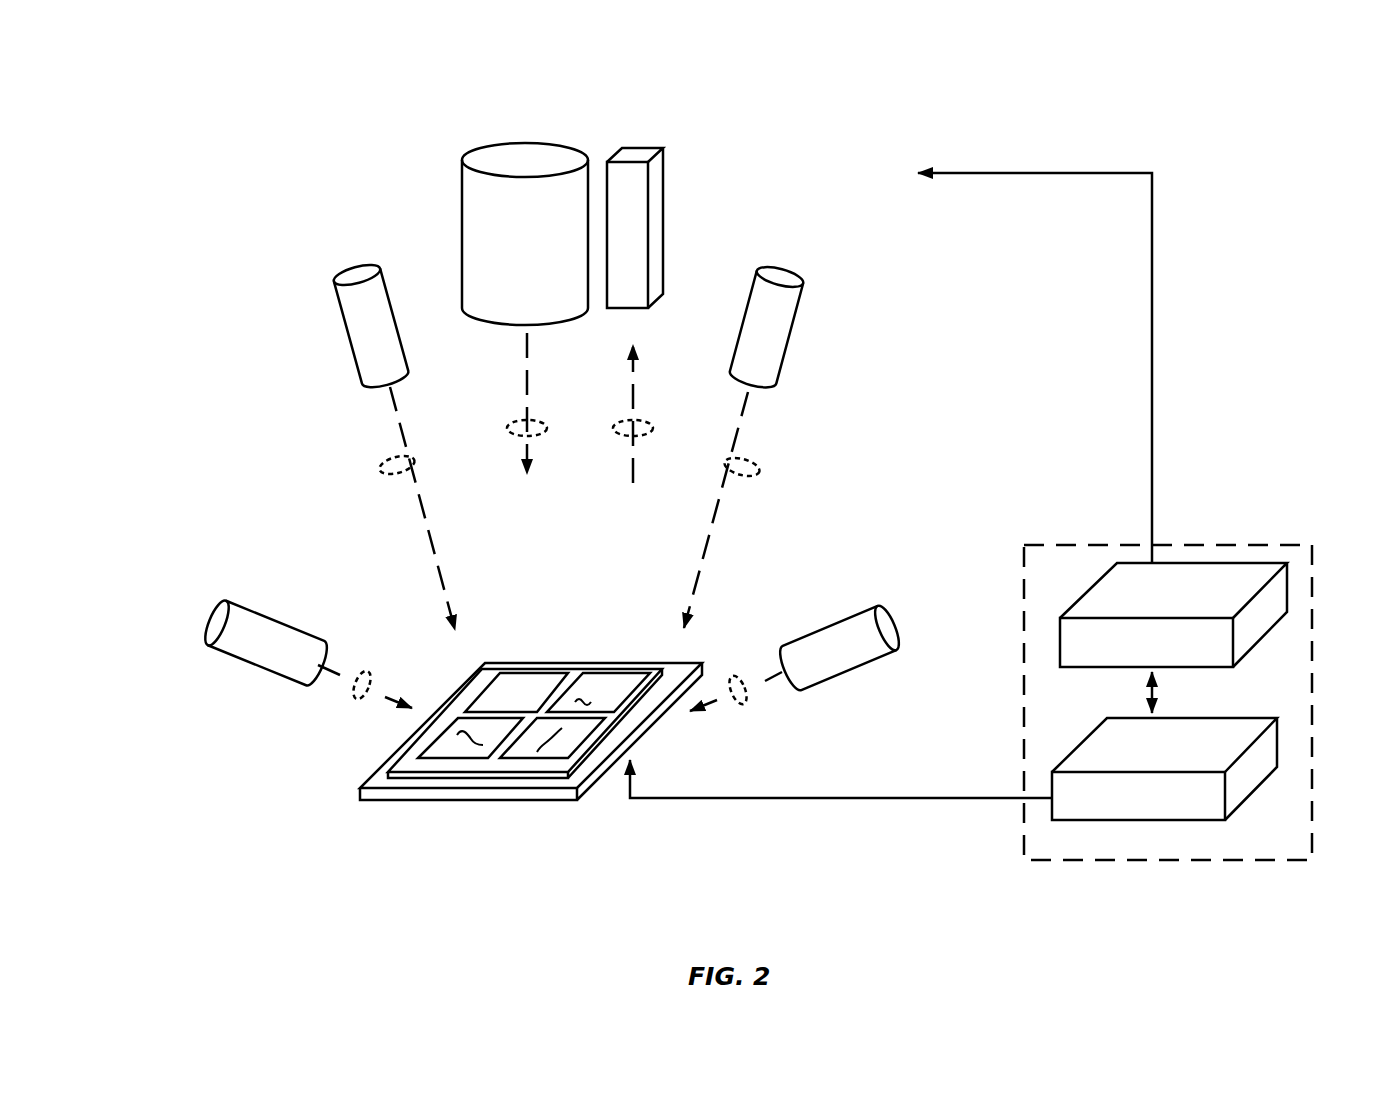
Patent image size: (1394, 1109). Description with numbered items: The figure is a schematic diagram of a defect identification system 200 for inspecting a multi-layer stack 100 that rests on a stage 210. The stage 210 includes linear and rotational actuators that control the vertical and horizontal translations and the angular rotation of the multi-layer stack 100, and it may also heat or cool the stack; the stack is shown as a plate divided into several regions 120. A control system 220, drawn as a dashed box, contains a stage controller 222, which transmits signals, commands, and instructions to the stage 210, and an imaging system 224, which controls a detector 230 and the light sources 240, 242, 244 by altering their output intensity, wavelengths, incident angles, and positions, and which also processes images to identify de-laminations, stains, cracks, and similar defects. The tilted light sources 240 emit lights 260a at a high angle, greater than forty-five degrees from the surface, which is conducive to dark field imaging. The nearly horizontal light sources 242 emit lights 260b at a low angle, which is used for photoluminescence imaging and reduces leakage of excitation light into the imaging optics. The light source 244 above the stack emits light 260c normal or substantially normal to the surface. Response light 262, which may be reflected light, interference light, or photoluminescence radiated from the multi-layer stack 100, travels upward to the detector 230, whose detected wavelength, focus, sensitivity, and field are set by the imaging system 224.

The defect identification system 200 is at (104, 113).
The light source 244 is at (463, 158).
The detector 230 is at (655, 153).
The light source 240 is at (333, 280).
The light source 242 is at (227, 602).
The lights 260a is at (378, 465).
The lights 260b is at (360, 692).
The light 260c is at (510, 428).
The response light 262 is at (656, 430).
The stage 210 is at (358, 793).
The multi-layer stack 100 is at (482, 782).
The die region 120 is at (456, 747).
The control system 220 is at (1243, 543).
The imaging system 224 is at (1288, 595).
The stage controller 222 is at (1277, 752).